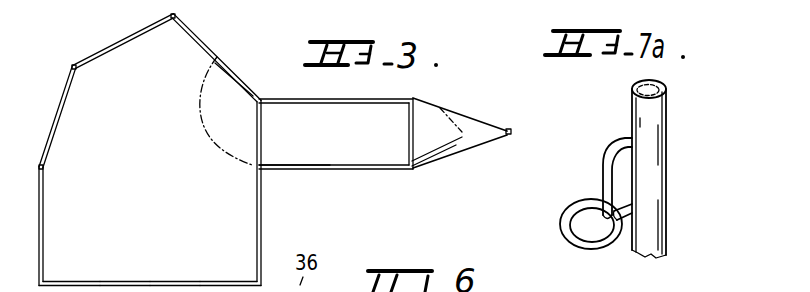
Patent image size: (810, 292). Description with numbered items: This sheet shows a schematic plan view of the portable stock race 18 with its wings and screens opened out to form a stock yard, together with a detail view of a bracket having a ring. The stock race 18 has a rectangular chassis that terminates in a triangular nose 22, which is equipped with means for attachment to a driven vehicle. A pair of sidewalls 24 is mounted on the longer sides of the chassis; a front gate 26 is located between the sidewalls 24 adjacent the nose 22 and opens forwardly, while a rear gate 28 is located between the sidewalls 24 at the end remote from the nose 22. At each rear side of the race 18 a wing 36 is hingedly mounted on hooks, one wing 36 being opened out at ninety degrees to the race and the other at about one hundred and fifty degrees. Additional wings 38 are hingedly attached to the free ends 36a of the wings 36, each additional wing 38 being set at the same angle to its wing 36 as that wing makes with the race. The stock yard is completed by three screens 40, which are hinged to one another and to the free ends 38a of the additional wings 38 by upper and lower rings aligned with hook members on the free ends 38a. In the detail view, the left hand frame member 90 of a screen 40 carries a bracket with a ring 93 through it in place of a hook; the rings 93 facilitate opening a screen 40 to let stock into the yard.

In FIG. 3, the stock race 18 is at (362, 150).
In FIG. 3, the triangular nose 22 is at (495, 139).
In FIG. 3, the sidewalls 24 is at (308, 169).
In FIG. 3, the front gate 26 is at (450, 147).
In FIG. 3, the rear gate 28 is at (227, 90).
In FIG. 3, the wing 36 is at (213, 50).
In FIG. 3, the free end of wing 36a is at (172, 22).
In FIG. 3, the additional wing 38 is at (112, 50).
In FIG. 3, the free end of additional wing 38a is at (80, 72).
In FIG. 3, the screen 40 is at (47, 142).
In FIG. 7A, the left hand frame member 90 is at (633, 106).
In FIG. 7A, the ring 93 is at (560, 223).